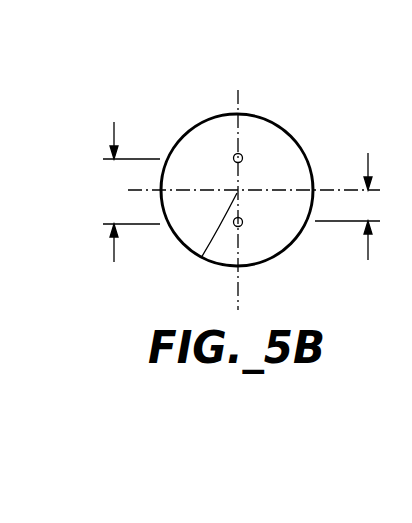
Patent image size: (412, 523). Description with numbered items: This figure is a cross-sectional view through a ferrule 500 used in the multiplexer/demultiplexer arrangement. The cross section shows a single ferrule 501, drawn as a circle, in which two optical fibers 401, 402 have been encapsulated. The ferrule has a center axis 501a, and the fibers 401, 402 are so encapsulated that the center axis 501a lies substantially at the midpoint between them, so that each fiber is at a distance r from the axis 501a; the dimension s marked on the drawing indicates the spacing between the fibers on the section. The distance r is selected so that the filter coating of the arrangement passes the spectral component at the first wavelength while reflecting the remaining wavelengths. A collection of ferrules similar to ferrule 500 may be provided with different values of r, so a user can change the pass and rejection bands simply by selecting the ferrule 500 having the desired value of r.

The ferrule 500 is at (243, 57).
The single ferrule 501 is at (207, 118).
The center axis 501a is at (201, 258).
The optical fiber 401 is at (240, 153).
The optical fiber 402 is at (243, 222).
The spacing dimension s is at (114, 135).
The distance r is at (347, 206).